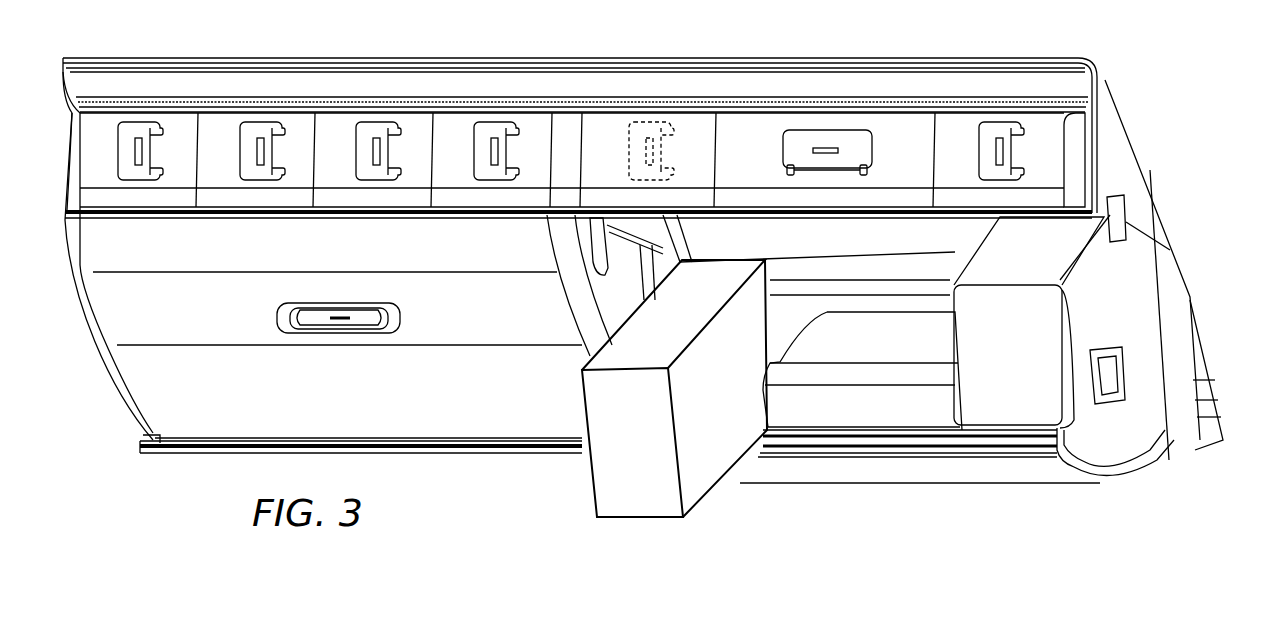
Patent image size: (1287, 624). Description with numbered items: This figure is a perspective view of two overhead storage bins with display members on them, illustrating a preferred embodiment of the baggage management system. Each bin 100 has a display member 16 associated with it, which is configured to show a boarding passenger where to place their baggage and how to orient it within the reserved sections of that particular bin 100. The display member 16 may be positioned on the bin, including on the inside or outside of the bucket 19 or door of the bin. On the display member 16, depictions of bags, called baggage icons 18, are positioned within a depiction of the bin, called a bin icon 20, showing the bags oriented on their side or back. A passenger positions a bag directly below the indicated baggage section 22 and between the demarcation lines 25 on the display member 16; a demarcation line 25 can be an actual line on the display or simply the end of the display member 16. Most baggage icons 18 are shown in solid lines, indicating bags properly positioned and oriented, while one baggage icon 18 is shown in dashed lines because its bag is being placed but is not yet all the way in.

The bin 100 is at (643, 287).
The display member 16 is at (90, 120).
The baggage icon 18 is at (138, 127).
The bucket 19 is at (1017, 473).
The bin icon 20 is at (553, 127).
The baggage section 22 is at (333, 127).
The demarcation line 25 is at (437, 125).